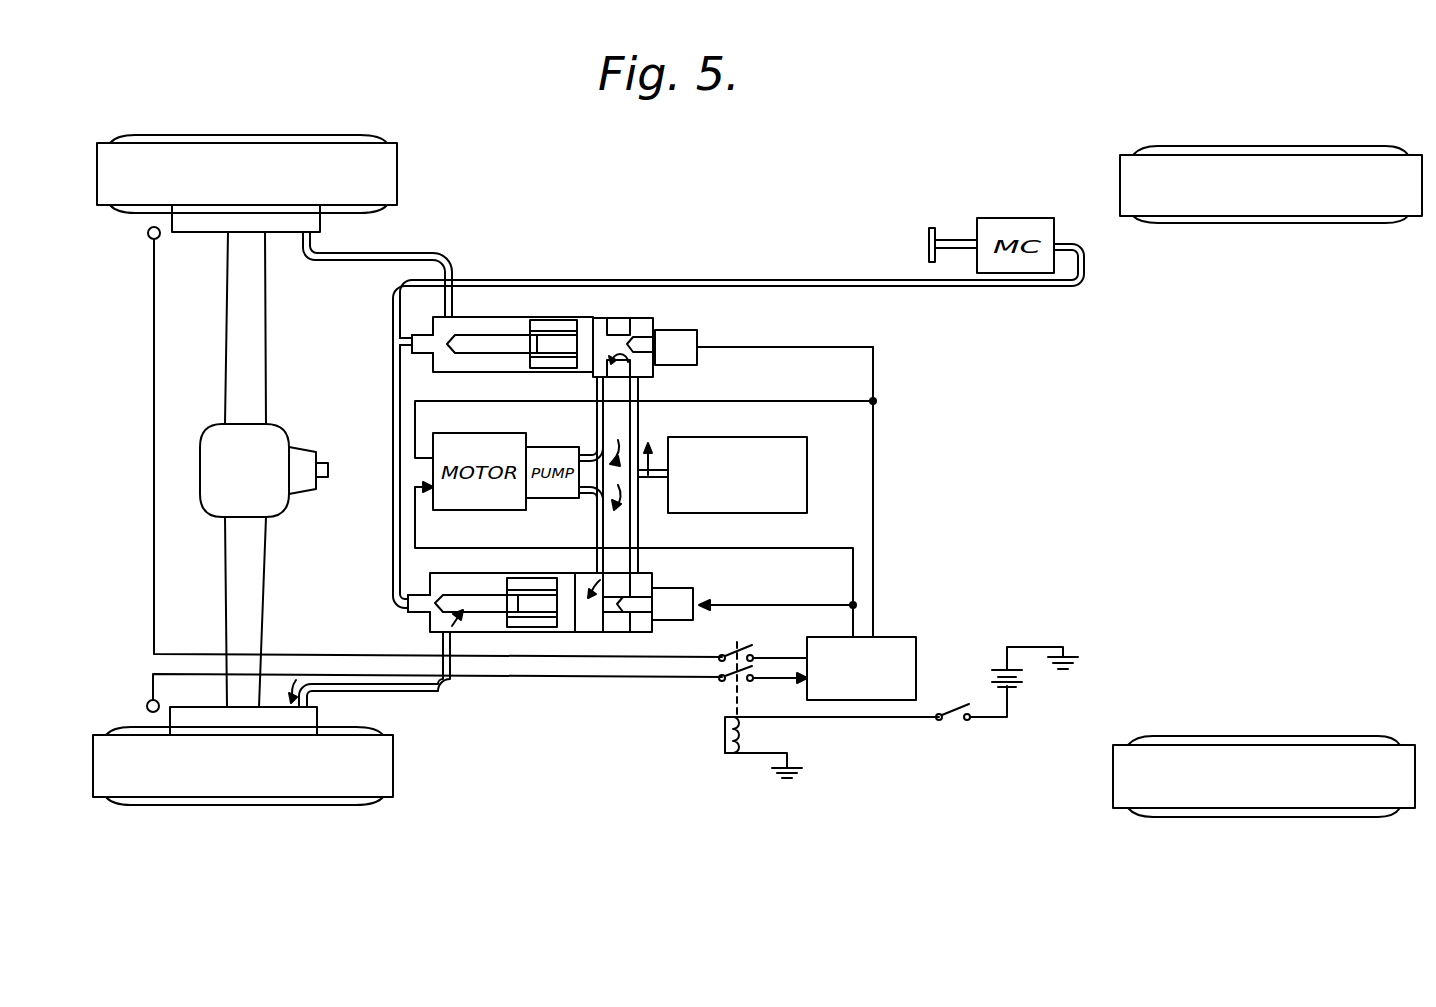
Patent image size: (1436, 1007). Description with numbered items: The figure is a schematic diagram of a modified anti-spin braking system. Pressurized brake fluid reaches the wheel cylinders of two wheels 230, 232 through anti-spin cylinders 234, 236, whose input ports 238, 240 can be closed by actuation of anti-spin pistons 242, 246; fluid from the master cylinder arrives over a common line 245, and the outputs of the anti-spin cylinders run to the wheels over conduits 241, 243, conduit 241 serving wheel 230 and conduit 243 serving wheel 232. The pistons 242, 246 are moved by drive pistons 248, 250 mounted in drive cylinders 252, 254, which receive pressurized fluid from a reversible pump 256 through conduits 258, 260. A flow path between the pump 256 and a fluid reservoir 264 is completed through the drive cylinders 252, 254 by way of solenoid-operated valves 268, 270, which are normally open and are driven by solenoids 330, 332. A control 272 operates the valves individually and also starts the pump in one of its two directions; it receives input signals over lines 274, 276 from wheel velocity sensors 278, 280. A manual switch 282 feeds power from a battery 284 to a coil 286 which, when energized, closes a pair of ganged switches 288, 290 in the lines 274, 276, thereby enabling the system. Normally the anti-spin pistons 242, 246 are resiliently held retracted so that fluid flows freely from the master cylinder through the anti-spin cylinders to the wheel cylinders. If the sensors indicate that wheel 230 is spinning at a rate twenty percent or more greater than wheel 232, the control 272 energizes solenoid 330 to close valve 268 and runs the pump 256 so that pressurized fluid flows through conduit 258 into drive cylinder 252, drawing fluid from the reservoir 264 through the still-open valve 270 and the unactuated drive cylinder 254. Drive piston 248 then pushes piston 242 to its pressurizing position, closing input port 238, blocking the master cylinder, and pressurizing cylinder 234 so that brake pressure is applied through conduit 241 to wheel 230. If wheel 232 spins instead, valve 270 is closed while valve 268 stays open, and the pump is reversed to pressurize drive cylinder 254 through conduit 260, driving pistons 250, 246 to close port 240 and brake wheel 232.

The wheel 230 is at (240, 792).
The wheel 232 is at (244, 148).
The anti-spin cylinder 234 is at (468, 570).
The anti-spin cylinder 236 is at (485, 375).
The input port 238 is at (412, 618).
The input port 240 is at (414, 333).
The conduit 241 is at (366, 693).
The piston 242 is at (503, 576).
The brake line to front wheel 243 is at (353, 257).
The master cylinder brake line 245 is at (393, 407).
The piston 246 is at (520, 318).
The drive piston 248 is at (565, 633).
The drive piston 250 is at (582, 320).
The drive cylinder 252 is at (593, 634).
The drive cylinder 254 is at (600, 318).
The reversible pump 256 is at (541, 455).
The conduit 258 is at (597, 520).
The conduit 260 is at (597, 414).
The fluid reservoir 264 is at (743, 437).
The solenoid-operated valve 268 is at (646, 626).
The solenoid-operated valve 270 is at (645, 322).
The control 272 is at (894, 638).
The line 274 is at (149, 676).
The line 276 is at (154, 557).
The wheel velocity sensor 278 is at (147, 706).
The wheel velocity sensor 280 is at (148, 236).
The manual switch 282 is at (966, 712).
The battery 284 is at (1014, 680).
The coil 286 is at (723, 734).
The ganged switch 288 is at (727, 682).
The ganged switch 290 is at (742, 646).
The solenoid 330 is at (687, 590).
The solenoid 332 is at (700, 340).